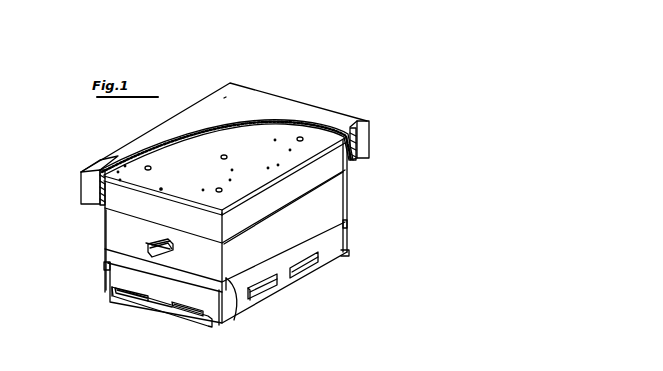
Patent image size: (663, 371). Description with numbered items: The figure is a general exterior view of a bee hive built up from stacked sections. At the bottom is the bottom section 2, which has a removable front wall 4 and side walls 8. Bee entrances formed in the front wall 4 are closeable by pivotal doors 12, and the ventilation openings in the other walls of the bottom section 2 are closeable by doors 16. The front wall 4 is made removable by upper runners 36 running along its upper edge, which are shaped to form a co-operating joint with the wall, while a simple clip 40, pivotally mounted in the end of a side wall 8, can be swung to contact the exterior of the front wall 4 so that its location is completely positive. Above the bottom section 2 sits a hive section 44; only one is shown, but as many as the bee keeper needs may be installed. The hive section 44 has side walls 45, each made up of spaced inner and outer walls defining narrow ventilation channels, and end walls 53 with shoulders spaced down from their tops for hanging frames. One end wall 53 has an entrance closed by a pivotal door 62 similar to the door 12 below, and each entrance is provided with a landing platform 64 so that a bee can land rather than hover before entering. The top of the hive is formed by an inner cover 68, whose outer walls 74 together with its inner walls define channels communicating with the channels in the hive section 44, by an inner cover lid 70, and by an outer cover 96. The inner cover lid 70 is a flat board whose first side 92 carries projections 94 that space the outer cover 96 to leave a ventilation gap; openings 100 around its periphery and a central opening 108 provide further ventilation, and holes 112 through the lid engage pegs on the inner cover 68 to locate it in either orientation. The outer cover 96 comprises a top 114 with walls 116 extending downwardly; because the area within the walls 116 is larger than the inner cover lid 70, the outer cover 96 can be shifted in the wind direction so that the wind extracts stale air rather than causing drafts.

The bottom section 2 is at (408, 158).
The removable front wall 4 is at (115, 293).
The side wall 8 is at (328, 250).
The pivotal door 12 is at (160, 298).
The door 16 is at (278, 285).
The upper runner 36 is at (107, 262).
The clip 40 is at (110, 278).
The hive section 44 is at (341, 208).
The side wall of hive section 45 is at (348, 252).
The end wall of hive section 53 is at (230, 280).
The pivotal door 62 is at (150, 245).
The landing platform 64 is at (145, 249).
The inner cover 68 is at (325, 178).
The inner cover lid 70 is at (318, 139).
The outer wall of inner cover 74 is at (113, 202).
The first side 92 is at (147, 165).
The projection 94 is at (140, 158).
The outer cover 96 is at (290, 103).
The opening 100 is at (218, 202).
The central opening 108 is at (225, 153).
The hole 112 is at (162, 187).
The top 114 is at (224, 98).
The wall 116 is at (372, 140).